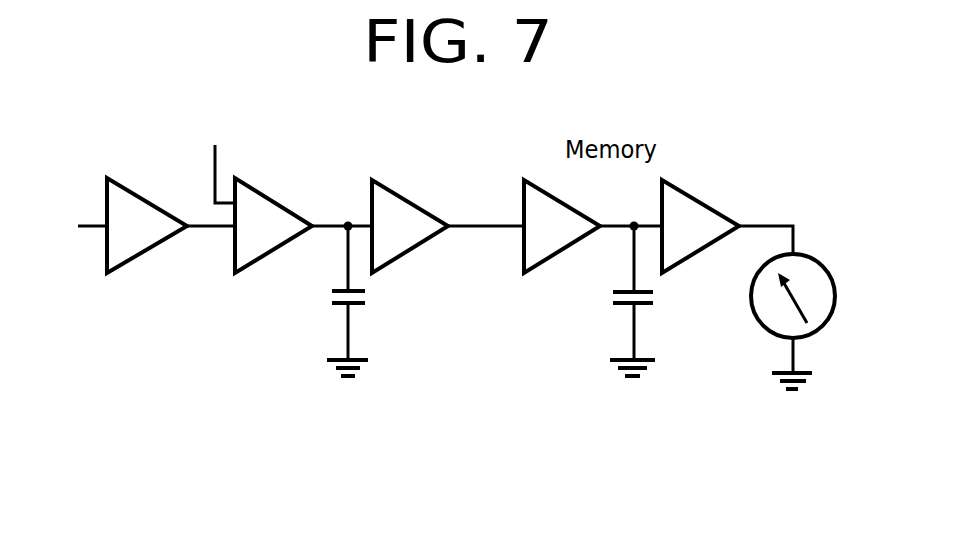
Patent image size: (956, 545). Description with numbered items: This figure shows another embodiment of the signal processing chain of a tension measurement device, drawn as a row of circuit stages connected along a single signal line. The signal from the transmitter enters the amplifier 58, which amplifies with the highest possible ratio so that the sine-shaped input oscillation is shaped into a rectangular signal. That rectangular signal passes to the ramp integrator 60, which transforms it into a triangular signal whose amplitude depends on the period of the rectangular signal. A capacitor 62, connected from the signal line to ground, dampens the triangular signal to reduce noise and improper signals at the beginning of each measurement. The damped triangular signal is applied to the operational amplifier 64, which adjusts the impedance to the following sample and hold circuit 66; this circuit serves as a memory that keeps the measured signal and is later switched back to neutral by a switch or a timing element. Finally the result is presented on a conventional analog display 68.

The amplifier 58 is at (128, 262).
The ramp integrator 60 is at (252, 262).
The capacitor 62 is at (365, 303).
The operational amplifier 64 is at (428, 210).
The sample and hold circuit 66 is at (708, 170).
The analog display 68 is at (823, 265).